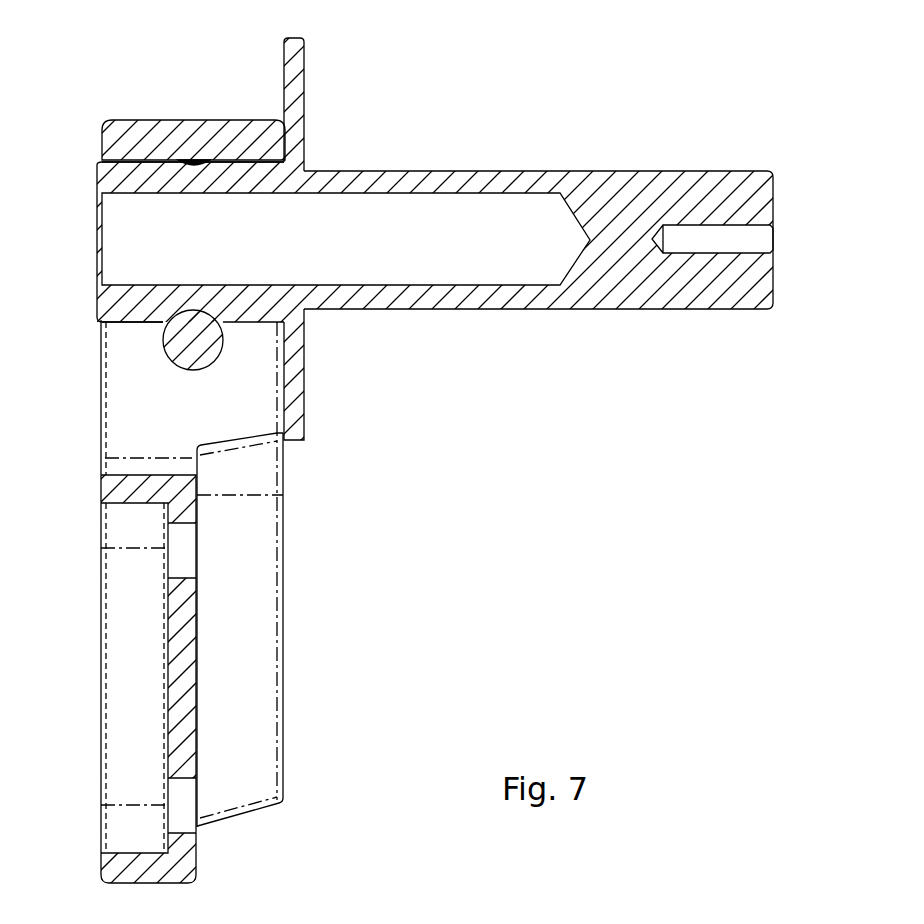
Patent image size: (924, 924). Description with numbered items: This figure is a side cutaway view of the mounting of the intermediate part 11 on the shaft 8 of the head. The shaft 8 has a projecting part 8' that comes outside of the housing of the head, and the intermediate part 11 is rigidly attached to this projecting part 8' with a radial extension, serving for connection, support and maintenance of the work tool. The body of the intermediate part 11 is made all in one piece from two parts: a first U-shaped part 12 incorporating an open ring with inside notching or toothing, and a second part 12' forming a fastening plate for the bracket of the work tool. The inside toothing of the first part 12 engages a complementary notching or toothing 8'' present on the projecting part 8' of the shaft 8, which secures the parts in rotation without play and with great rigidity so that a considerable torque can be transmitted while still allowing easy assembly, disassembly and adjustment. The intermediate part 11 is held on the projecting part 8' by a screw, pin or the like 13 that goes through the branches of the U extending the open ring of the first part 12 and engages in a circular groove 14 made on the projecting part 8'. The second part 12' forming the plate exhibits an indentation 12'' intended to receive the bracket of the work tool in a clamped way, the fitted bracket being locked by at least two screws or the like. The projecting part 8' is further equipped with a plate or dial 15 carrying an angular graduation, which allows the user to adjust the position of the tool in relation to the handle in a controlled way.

The shaft 8 is at (462, 462).
The projecting part of the shaft 8' is at (104, 332).
The notching or toothing 8'' is at (168, 144).
The intermediate part 11 is at (392, 464).
The first U-shaped part 12 is at (462, 462).
The second part forming a fastening plate 12' is at (305, 574).
The indentation 12'' is at (376, 615).
The screw, pin or the like 13 is at (207, 348).
The circular groove 14 is at (195, 158).
The plate or dial 15 is at (292, 70).